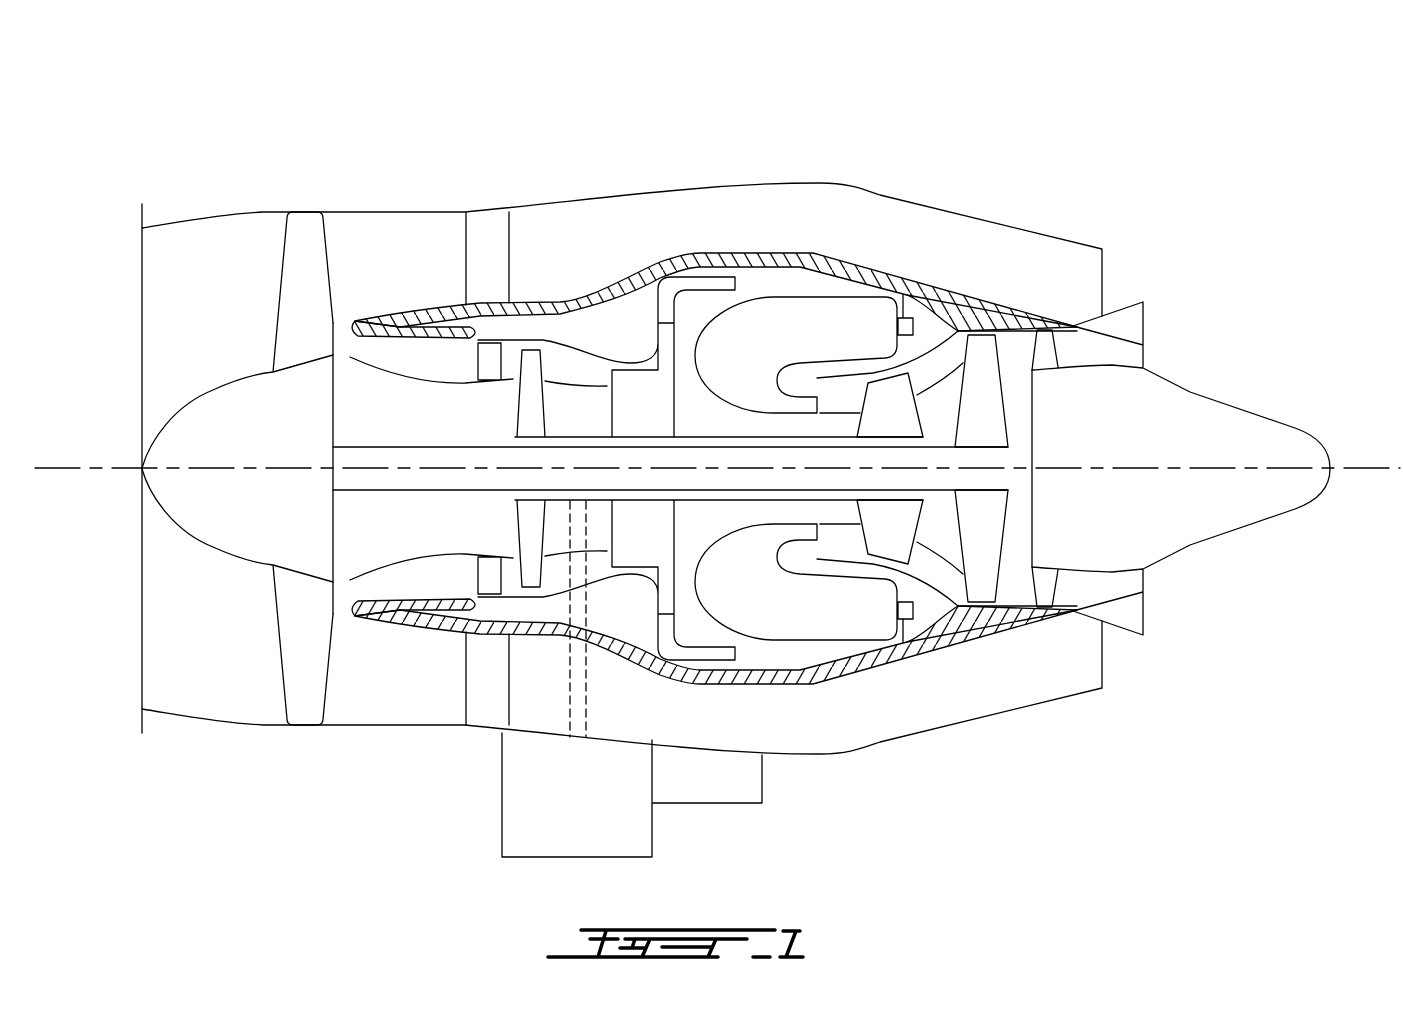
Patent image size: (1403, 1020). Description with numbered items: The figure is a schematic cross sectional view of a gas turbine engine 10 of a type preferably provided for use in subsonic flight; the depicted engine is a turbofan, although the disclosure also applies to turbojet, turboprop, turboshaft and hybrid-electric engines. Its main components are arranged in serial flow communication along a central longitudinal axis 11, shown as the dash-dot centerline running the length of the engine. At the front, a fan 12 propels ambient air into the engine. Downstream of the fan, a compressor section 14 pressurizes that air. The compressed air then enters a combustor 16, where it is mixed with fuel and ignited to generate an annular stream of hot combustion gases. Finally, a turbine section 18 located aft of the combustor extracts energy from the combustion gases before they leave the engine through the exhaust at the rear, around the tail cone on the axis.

The gas turbine engine 10 is at (912, 178).
The central longitudinal axis 11 is at (1370, 468).
The fan 12 is at (298, 631).
The compressor section 14 is at (567, 362).
The combustor 16 is at (797, 318).
The turbine section 18 is at (937, 538).